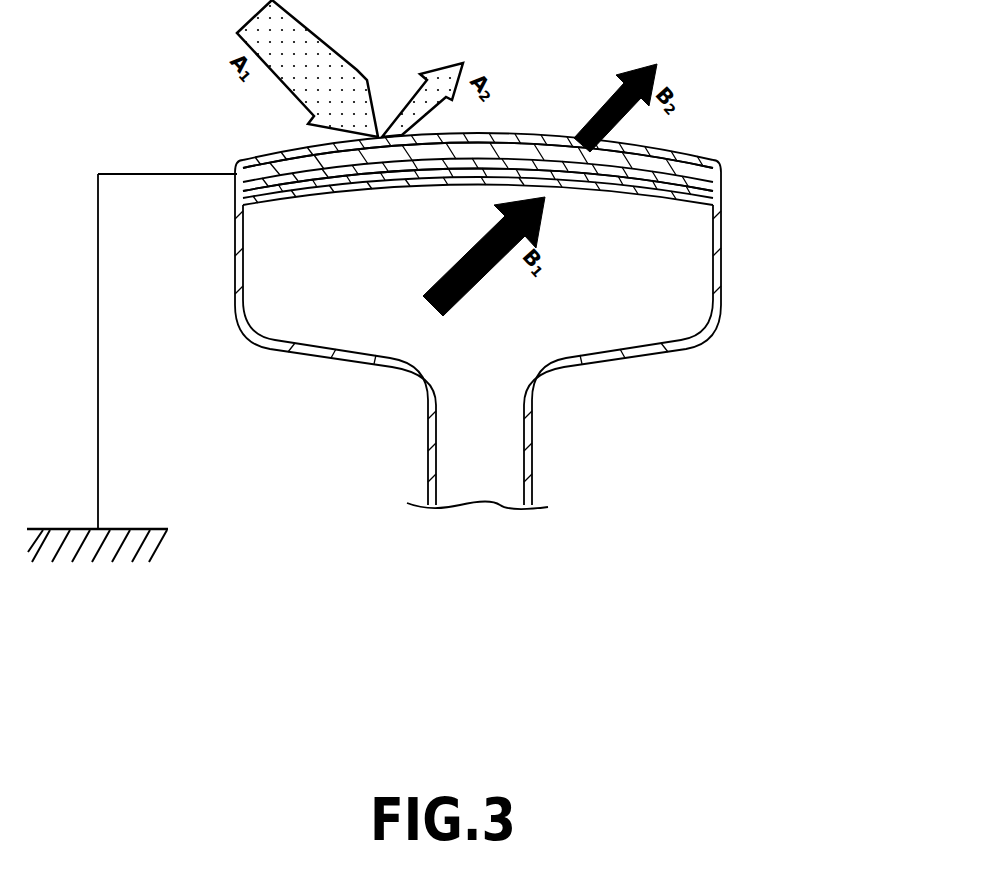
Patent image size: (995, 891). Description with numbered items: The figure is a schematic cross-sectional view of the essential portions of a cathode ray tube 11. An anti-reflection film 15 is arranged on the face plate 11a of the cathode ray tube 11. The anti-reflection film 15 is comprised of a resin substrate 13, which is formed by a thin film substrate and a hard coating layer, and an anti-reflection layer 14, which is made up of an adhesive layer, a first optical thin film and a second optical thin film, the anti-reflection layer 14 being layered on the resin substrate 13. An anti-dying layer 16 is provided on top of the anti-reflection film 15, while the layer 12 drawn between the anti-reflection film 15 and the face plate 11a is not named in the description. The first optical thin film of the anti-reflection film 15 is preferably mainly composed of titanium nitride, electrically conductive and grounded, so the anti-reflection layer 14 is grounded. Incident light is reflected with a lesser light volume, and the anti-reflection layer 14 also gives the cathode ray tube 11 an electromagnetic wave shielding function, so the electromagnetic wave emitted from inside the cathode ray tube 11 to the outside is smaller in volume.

The cathode ray tube 11 is at (603, 358).
The face plate 11a is at (722, 190).
The underlayer 12 is at (238, 207).
The resin substrate 13 is at (238, 196).
The anti-reflection layer 14 is at (236, 180).
The anti-reflection film 15 is at (157, 213).
The anti-dying layer 16 is at (240, 162).